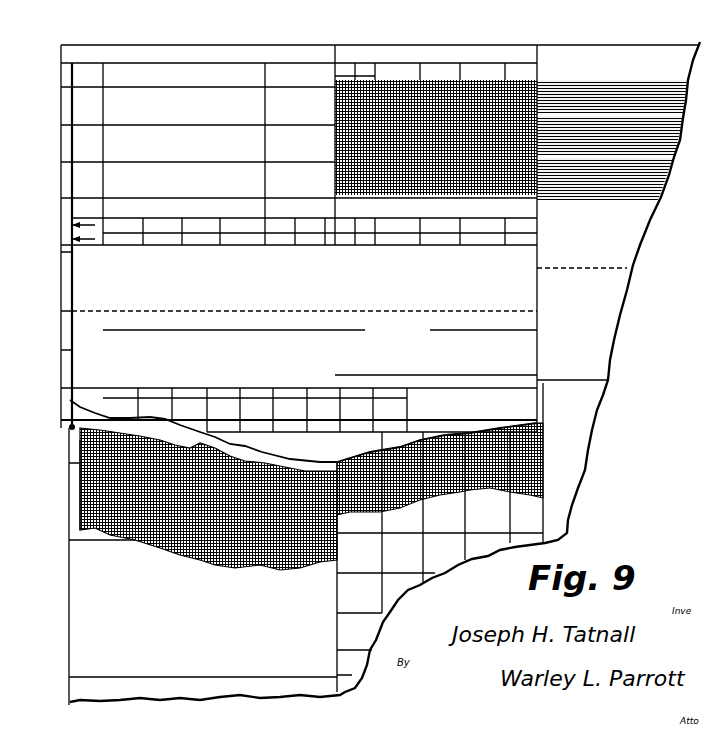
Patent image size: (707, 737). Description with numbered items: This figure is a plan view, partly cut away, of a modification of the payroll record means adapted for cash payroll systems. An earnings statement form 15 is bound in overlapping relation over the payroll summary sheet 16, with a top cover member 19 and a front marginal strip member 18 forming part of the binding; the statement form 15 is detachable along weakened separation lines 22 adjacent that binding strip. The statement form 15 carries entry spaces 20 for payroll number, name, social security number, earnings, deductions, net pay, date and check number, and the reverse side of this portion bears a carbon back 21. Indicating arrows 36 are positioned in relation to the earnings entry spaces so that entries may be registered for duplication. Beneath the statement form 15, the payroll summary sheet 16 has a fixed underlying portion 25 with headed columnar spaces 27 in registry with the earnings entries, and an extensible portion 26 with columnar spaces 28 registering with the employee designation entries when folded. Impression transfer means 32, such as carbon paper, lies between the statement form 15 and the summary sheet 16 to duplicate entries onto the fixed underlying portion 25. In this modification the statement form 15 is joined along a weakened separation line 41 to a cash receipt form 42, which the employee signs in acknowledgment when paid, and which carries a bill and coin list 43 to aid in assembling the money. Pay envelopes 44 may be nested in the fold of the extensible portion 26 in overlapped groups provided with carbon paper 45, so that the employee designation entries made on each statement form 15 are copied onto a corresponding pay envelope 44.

The earnings statement form 15 is at (82, 278).
The payroll summary sheet 16 is at (80, 111).
The front marginal strip member 18 is at (562, 541).
The top cover member 19 is at (580, 418).
The entry spaces 20 is at (522, 220).
The carbon back 21 is at (665, 178).
The weakened separation lines 22 is at (540, 410).
The fixed underlying portion 25 is at (472, 50).
The extensible portion 26 is at (233, 47).
The columnar spaces 27 is at (410, 73).
The columnar spaces 28 is at (128, 100).
The impression transfer means 32 is at (335, 96).
The indicating arrows 36 is at (95, 216).
The weakened separation line 41 is at (130, 311).
The cash receipt form 42 is at (85, 343).
The bill and coin list 43 is at (225, 398).
The pay envelopes 44 is at (95, 553).
The carbon paper 45 is at (232, 568).